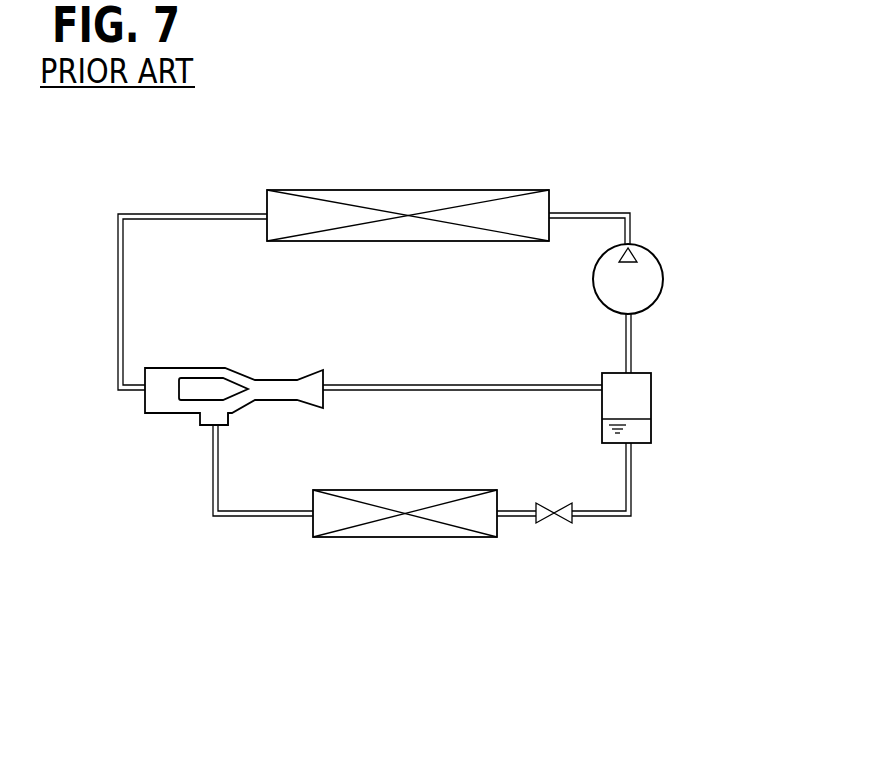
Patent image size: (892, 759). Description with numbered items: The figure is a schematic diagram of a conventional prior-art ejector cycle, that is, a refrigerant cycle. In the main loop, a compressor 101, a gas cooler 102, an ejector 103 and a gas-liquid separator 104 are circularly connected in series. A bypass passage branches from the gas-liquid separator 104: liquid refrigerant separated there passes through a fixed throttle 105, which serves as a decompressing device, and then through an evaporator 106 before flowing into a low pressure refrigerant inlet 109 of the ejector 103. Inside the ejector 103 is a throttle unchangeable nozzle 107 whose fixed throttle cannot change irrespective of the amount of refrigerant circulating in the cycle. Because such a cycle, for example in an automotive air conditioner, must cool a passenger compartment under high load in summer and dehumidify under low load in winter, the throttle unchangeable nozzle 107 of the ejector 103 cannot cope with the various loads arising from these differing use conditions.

The compressor 101 is at (658, 279).
The gas cooler 102 is at (409, 195).
The ejector 103 is at (253, 384).
The gas-liquid separator 104 is at (645, 402).
The fixed throttle 105 is at (565, 520).
The evaporator 106 is at (405, 530).
The throttle unchangeable nozzle 107 is at (217, 378).
The low pressure refrigerant inlet 109 is at (208, 427).